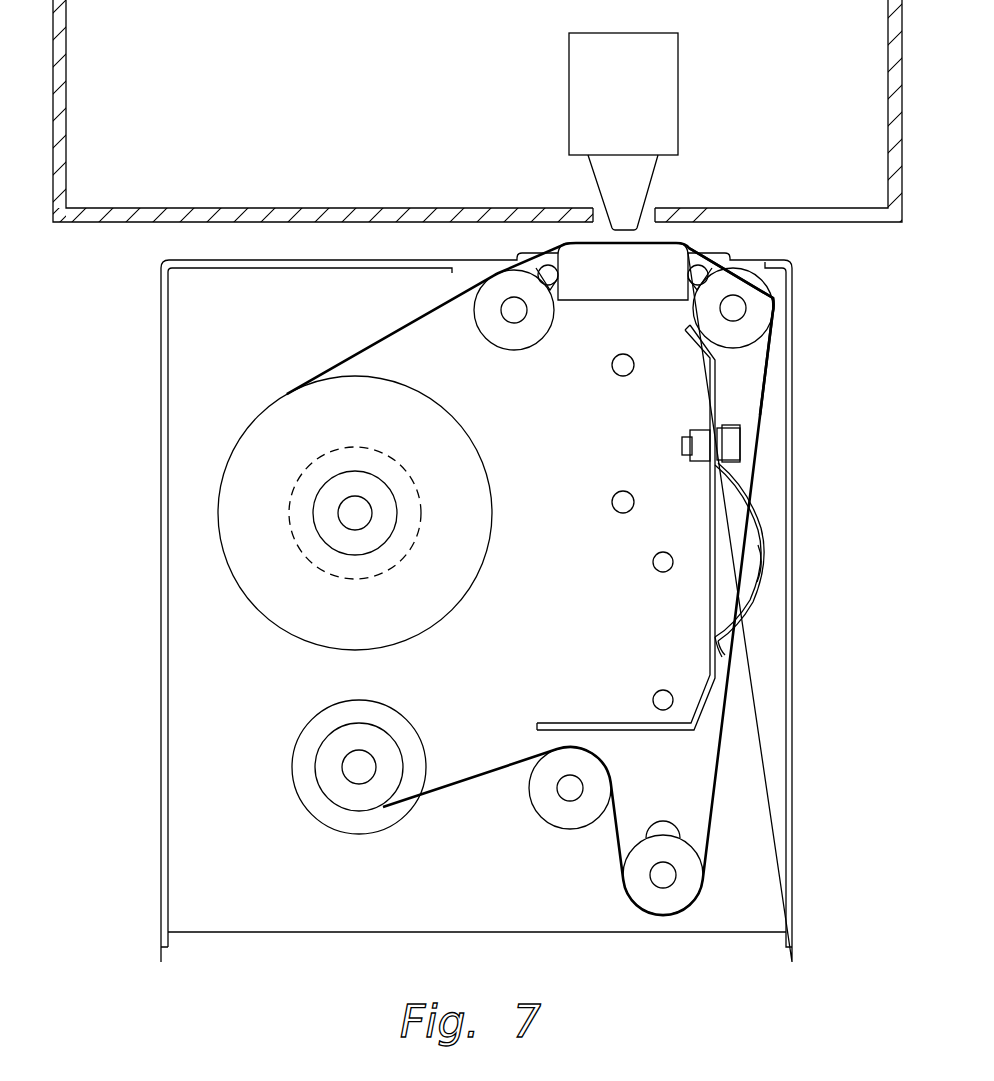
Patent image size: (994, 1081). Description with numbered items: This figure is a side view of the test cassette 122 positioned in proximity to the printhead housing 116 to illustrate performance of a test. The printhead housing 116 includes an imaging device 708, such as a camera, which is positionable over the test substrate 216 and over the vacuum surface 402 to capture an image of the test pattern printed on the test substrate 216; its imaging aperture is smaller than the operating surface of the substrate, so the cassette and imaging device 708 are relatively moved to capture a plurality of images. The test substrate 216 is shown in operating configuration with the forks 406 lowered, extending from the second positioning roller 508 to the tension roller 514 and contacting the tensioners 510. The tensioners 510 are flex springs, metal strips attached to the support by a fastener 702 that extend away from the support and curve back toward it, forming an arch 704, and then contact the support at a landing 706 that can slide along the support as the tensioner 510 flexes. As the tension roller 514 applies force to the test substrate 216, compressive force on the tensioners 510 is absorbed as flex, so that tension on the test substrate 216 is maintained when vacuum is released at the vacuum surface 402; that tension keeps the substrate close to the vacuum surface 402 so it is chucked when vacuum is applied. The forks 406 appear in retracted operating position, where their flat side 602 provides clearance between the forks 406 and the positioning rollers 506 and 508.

The printhead housing 116 is at (78, 224).
The imaging device 708 is at (678, 86).
The vacuum surface 402 is at (661, 242).
The forks 406 is at (559, 273).
The flat side 602 is at (776, 298).
The test substrate 216 is at (380, 333).
The second positioning roller 508 is at (708, 308).
The positioning roller 506 is at (511, 342).
The fastener 702 is at (729, 425).
The tensioners 510 is at (742, 497).
The test cassette 122 is at (161, 558).
The arch 704 is at (762, 562).
The landing 706 is at (718, 640).
The tension roller 514 is at (640, 882).